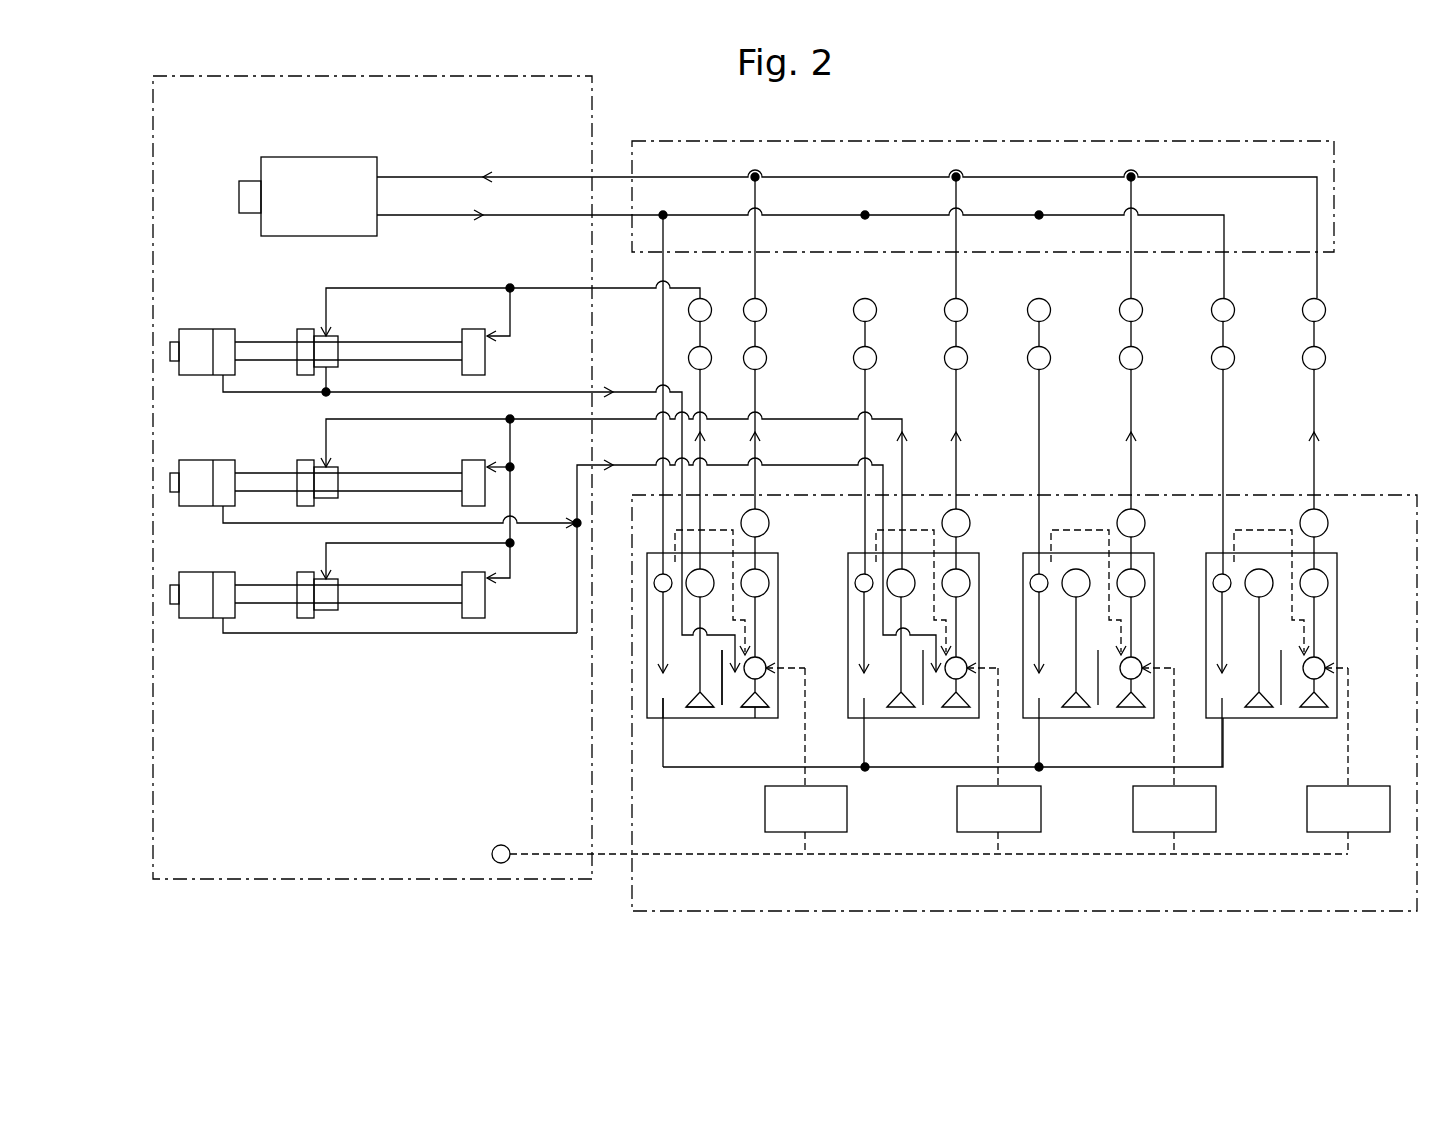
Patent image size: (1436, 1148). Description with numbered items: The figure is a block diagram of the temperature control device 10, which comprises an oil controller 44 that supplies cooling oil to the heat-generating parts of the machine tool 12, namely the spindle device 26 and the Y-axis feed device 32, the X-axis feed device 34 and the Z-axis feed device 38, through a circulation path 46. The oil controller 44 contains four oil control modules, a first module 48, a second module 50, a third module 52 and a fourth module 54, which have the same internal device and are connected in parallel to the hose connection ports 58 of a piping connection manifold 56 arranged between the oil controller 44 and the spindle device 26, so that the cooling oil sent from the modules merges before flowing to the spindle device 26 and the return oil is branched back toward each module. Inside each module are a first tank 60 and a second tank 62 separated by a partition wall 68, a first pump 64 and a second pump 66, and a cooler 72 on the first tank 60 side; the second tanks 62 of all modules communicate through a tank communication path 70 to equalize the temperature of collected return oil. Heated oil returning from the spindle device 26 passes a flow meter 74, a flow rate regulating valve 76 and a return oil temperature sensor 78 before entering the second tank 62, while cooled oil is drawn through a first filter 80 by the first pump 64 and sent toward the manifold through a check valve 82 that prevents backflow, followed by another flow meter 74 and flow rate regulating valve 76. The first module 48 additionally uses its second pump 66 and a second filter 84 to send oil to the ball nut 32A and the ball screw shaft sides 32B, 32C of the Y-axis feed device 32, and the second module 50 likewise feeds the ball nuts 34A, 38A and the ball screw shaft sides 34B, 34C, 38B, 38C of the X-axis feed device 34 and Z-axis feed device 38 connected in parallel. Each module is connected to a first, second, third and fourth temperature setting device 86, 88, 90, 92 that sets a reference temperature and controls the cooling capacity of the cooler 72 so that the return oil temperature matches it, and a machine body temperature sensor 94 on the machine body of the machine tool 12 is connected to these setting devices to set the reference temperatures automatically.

The temperature control device 10 is at (1374, 343).
The machine tool 12 is at (606, 79).
The spindle device 26 is at (307, 172).
The Y-axis feed device 32 is at (200, 322).
The ball nut 32A is at (306, 333).
The ball screw shaft side 32B is at (462, 340).
The ball screw shaft side 32C is at (250, 352).
The X-axis feed device 34 is at (200, 453).
The ball nut 34A is at (306, 464).
The ball screw shaft side 34B is at (462, 471).
The ball screw shaft side 34C is at (250, 483).
The Z-axis feed device 38 is at (190, 626).
The ball nut 38A is at (306, 576).
The ball screw shaft side 38B is at (462, 583).
The ball screw shaft side 38C is at (250, 596).
The oil controller 44 is at (1395, 489).
The circulation path 46 is at (551, 215).
The first module 48 is at (719, 717).
The second module 50 is at (985, 574).
The third module 52 is at (1161, 574).
The fourth module 54 is at (1345, 574).
The piping connection manifold 56 is at (950, 135).
The hose connection port 58 is at (667, 248).
The first tank 60 is at (743, 710).
The second tank 62 is at (657, 716).
The first pump 64 is at (770, 591).
The second pump 66 is at (691, 595).
The partition wall 68 is at (723, 710).
The tank communication path 70 is at (920, 769).
The cooler 72 is at (766, 664).
The flow meter 74 is at (853, 306).
The flow rate regulating valve 76 is at (853, 354).
The return oil temperature sensor 78 is at (656, 577).
The first filter 80 is at (760, 711).
The check valve 82 is at (769, 519).
The second filter 84 is at (703, 711).
The first temperature setting device 86 is at (838, 834).
The second temperature setting device 88 is at (1020, 834).
The third temperature setting device 90 is at (1160, 834).
The fourth temperature setting device 92 is at (1378, 834).
The machine body temperature sensor 94 is at (502, 864).